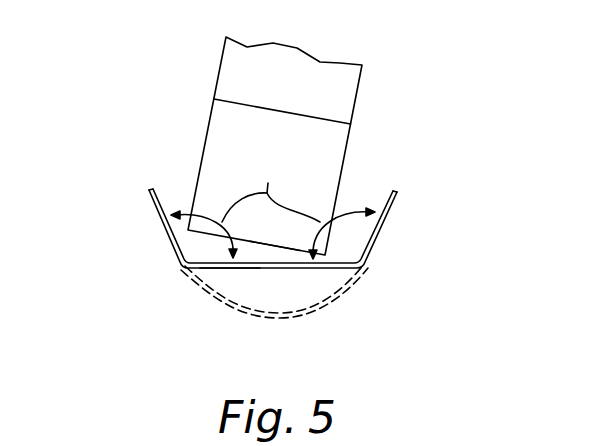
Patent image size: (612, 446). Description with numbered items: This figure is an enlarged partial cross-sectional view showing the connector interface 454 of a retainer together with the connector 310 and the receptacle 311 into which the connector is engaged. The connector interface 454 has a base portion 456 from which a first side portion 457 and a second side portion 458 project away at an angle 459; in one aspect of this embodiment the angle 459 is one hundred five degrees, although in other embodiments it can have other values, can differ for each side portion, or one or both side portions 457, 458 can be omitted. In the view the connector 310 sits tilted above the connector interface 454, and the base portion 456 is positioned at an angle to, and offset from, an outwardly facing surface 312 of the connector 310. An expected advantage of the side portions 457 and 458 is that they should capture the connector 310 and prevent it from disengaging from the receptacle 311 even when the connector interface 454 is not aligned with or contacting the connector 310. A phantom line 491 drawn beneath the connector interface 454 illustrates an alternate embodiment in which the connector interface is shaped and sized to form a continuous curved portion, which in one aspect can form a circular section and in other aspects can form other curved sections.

The connector 310 is at (335, 159).
The receptacle 311 is at (350, 93).
The outwardly facing surface 312 is at (280, 247).
The connector interface 454 is at (376, 246).
The base portion 456 is at (227, 268).
The first side portion 457 is at (158, 231).
The second side portion 458 is at (388, 218).
The angle 459 is at (271, 190).
The phantom line 491 is at (200, 287).